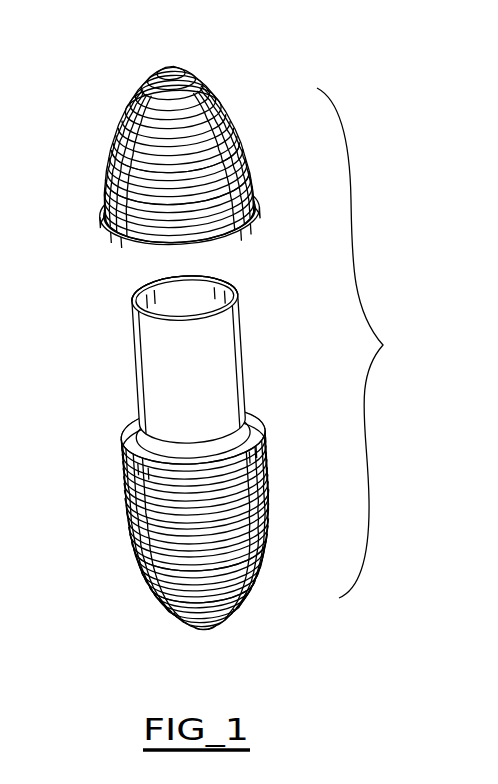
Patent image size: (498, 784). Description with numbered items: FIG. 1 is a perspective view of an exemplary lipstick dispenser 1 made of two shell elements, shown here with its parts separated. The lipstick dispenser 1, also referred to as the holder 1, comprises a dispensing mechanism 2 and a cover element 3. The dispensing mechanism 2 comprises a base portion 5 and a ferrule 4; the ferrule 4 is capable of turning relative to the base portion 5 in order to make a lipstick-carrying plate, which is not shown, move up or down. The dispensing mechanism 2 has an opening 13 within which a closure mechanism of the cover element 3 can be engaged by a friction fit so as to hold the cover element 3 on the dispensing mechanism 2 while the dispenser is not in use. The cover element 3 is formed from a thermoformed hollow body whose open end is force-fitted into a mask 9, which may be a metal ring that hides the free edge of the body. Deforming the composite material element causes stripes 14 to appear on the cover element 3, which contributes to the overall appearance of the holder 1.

The lipstick dispenser 1 is at (365, 343).
The dispensing mechanism 2 is at (124, 426).
The cover element 3 is at (212, 150).
The ferrule 4 is at (177, 371).
The base portion 5 is at (156, 568).
The mask 9 is at (110, 238).
The opening 13 is at (232, 287).
The stripes 14 is at (168, 122).